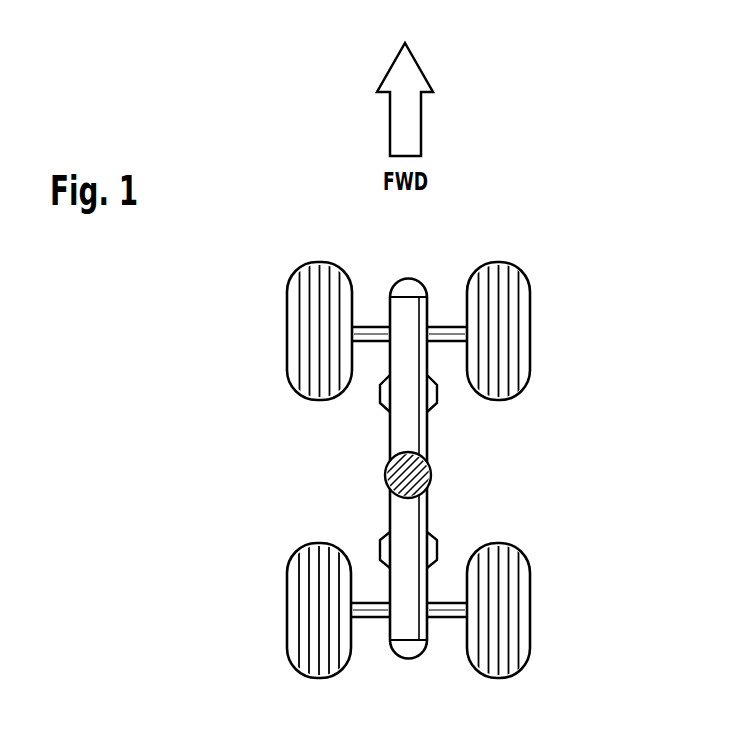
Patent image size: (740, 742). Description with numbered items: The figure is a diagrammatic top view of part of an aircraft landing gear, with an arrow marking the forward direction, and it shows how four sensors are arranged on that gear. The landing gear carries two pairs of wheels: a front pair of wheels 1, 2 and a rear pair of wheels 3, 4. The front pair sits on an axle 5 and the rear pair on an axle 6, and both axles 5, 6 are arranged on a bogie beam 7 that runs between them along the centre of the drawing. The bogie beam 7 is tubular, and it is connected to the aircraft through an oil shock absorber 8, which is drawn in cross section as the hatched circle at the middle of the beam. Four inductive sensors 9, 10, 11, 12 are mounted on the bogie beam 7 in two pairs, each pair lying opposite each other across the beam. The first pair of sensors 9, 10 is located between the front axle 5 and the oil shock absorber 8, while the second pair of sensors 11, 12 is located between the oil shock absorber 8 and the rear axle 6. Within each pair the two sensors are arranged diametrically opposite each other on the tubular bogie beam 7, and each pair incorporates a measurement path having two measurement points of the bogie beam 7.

The wheel 1 is at (287, 325).
The wheel 2 is at (531, 328).
The wheel 3 is at (287, 613).
The wheel 4 is at (531, 612).
The axle 5 is at (451, 327).
The axle 6 is at (448, 617).
The bogie beam 7 is at (400, 437).
The oil shock absorber 8 is at (386, 483).
The inductive sensor 9 is at (380, 398).
The inductive sensor 10 is at (440, 400).
The inductive sensor 11 is at (376, 546).
The inductive sensor 12 is at (441, 546).